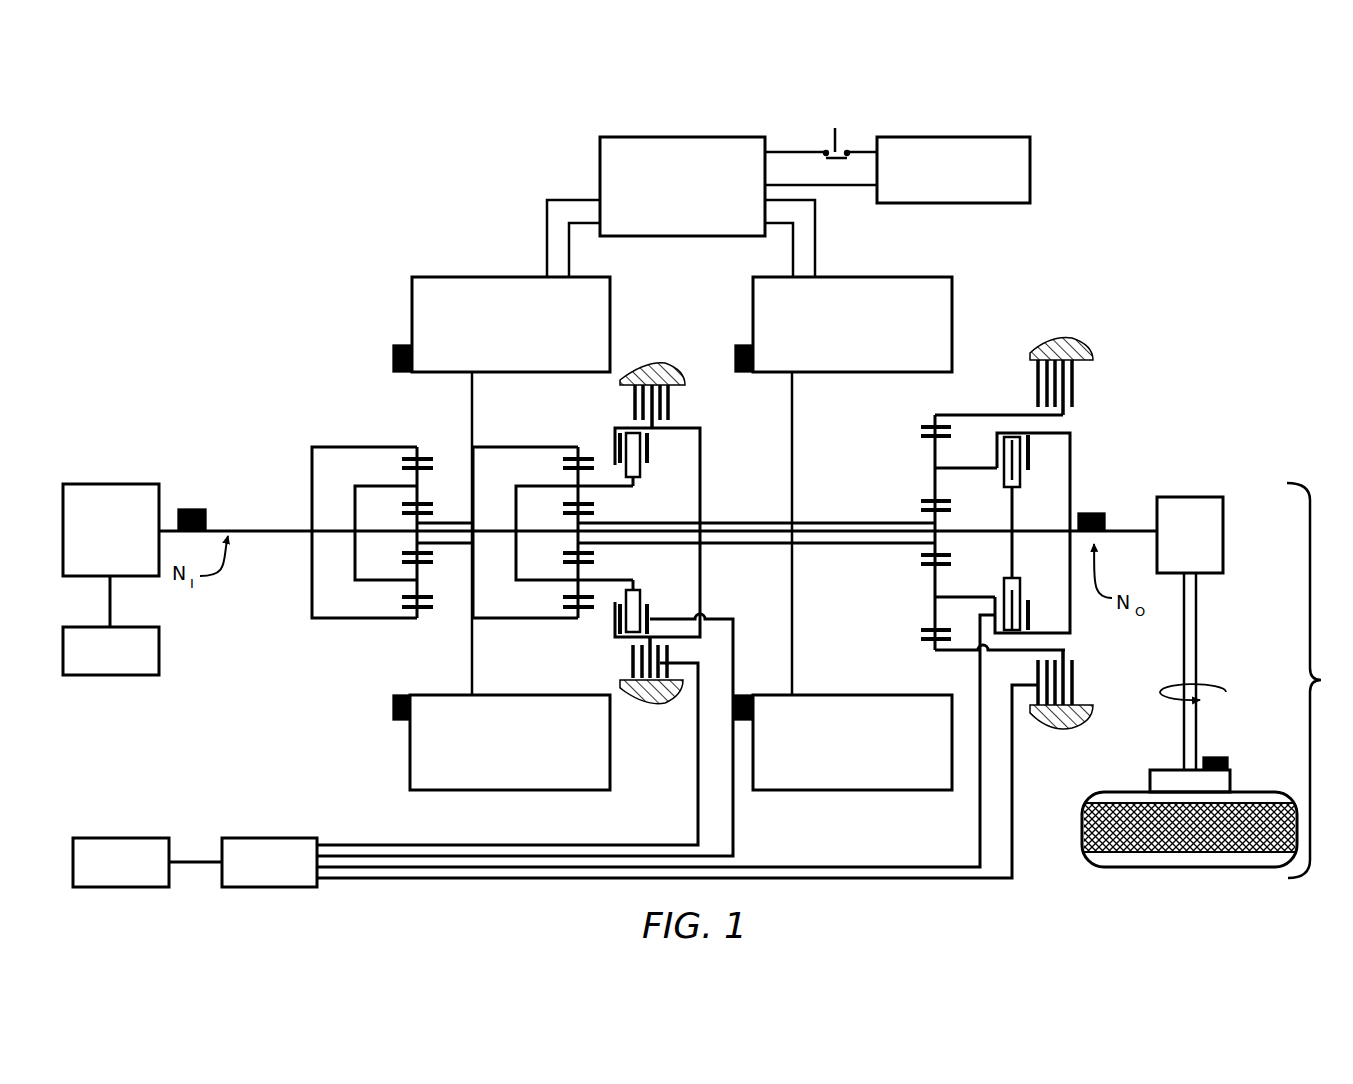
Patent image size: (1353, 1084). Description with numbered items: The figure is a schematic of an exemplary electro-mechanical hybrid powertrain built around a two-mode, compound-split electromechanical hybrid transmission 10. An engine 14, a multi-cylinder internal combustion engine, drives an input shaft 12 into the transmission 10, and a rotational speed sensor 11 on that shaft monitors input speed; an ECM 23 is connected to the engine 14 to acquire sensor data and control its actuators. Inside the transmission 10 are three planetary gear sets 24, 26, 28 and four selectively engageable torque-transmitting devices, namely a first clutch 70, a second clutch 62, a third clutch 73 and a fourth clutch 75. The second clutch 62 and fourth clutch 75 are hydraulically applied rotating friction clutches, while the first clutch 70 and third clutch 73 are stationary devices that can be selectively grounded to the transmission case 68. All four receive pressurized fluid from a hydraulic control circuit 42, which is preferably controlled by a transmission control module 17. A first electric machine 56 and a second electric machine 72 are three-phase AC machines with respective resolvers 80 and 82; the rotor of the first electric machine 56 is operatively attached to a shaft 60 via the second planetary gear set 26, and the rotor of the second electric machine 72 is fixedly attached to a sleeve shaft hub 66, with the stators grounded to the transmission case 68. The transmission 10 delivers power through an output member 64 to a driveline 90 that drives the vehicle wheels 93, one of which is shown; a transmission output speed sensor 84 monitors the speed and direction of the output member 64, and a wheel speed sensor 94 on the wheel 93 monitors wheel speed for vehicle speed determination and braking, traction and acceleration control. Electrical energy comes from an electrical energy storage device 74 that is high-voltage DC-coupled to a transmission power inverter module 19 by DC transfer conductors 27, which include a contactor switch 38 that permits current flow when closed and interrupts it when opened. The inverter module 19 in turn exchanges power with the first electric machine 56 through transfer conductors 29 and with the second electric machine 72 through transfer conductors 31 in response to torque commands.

The electromechanical hybrid transmission 10 is at (372, 238).
The rotational speed sensor 11 is at (192, 509).
The input shaft 12 is at (268, 529).
The engine 14 is at (110, 484).
The transmission control module 17 is at (110, 838).
The transmission power inverter module 19 is at (600, 155).
The engine control module 23 is at (155, 668).
The first planetary gear set 24 is at (410, 440).
The second planetary gear set 26 is at (573, 440).
The DC transfer conductors 27 is at (780, 152).
The third planetary gear set 28 is at (930, 414).
The transfer conductors 29 is at (547, 238).
The transfer conductors 31 is at (815, 232).
The contactor switch 38 is at (840, 135).
The hydraulic control circuit 42 is at (237, 838).
The first electric machine 56 is at (412, 313).
The shaft 60 is at (985, 531).
The clutch C2 62 is at (1032, 474).
The output member 64 is at (1127, 531).
The sleeve shaft hub 66 is at (830, 523).
The transmission case 68 is at (652, 375).
The clutch C1 70 is at (1025, 380).
The second electric machine 72 is at (952, 298).
The clutch C3 73 is at (670, 404).
The electrical energy storage device 74 is at (1030, 160).
The clutch C4 75 is at (652, 458).
The resolver 80 is at (393, 356).
The resolver 82 is at (743, 345).
The transmission output speed sensor 84 is at (1091, 513).
The driveline 90 is at (1217, 680).
The vehicle wheel 93 is at (1150, 782).
The wheel speed sensor 94 is at (1218, 757).